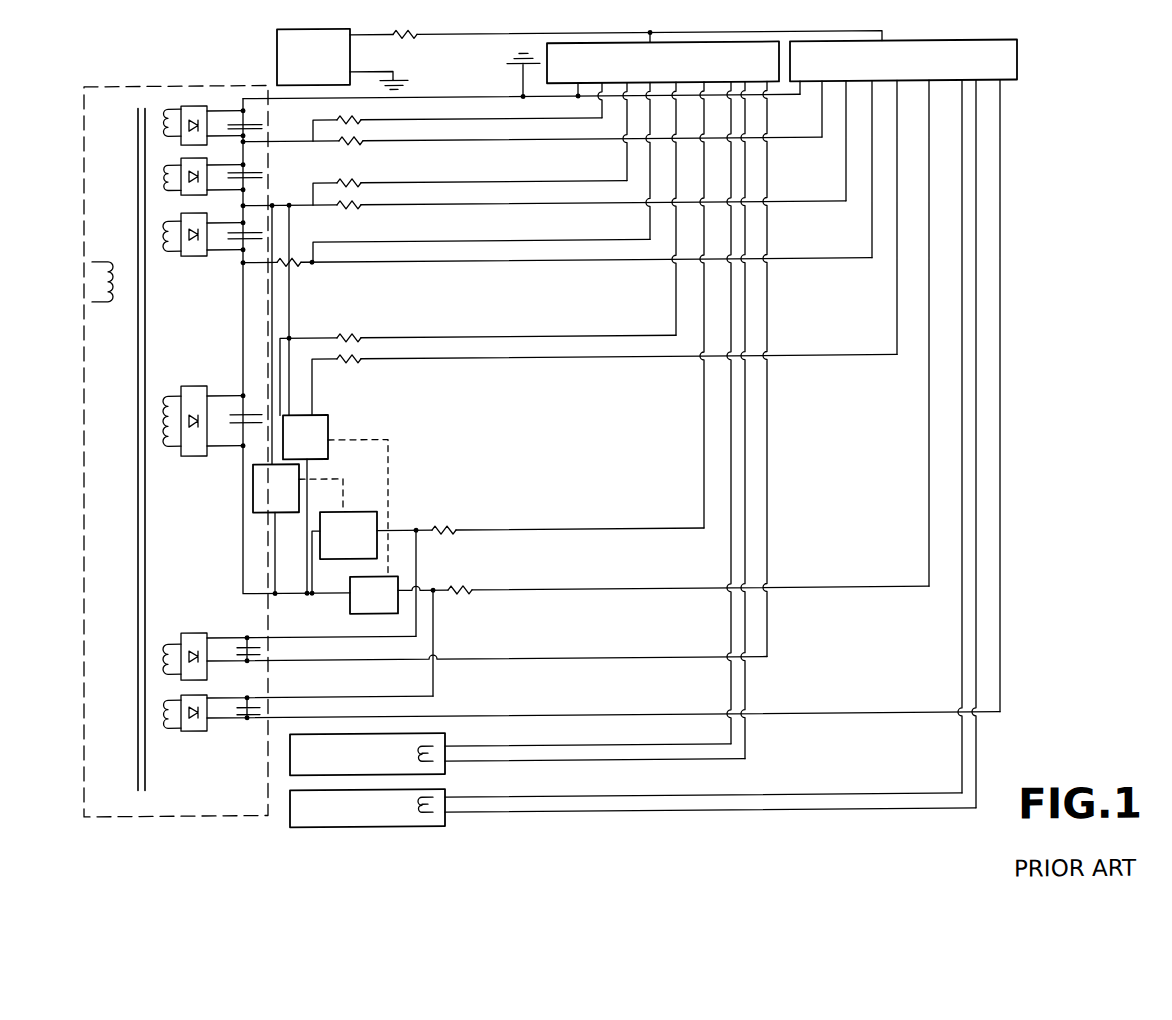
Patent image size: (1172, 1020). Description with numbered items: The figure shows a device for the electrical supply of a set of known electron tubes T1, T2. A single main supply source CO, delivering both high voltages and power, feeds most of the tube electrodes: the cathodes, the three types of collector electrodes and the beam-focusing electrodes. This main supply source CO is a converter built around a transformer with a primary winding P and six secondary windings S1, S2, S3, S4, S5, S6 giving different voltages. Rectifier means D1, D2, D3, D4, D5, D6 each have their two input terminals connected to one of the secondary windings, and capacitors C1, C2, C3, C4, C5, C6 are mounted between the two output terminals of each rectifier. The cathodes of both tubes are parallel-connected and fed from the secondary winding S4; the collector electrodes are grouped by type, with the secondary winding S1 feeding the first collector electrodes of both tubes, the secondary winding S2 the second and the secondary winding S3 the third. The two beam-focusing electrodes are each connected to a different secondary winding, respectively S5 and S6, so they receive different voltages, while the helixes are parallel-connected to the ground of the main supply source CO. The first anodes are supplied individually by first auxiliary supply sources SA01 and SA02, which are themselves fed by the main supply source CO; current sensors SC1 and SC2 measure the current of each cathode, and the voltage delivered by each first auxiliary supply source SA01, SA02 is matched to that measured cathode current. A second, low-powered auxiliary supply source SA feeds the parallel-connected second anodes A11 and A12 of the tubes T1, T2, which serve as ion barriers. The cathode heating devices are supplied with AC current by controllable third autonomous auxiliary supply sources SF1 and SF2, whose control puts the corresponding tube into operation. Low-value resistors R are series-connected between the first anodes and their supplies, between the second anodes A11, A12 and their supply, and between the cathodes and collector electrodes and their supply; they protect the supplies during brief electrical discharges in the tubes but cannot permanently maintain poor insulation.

The main supply source CO is at (149, 83).
The primary winding P is at (93, 257).
The secondary winding S1 is at (166, 107).
The secondary winding S2 is at (167, 158).
The secondary winding S3 is at (168, 213).
The secondary winding S4 is at (172, 384).
The secondary winding S5 is at (172, 628).
The secondary winding S6 is at (171, 728).
The rectifier means D1 is at (194, 103).
The rectifier means D2 is at (194, 155).
The rectifier means D3 is at (195, 210).
The rectifier means D4 is at (195, 383).
The rectifier means D5 is at (194, 630).
The rectifier means D6 is at (202, 728).
The capacitor C1 is at (264, 120).
The capacitor C2 is at (264, 168).
The capacitor C3 is at (233, 242).
The capacitor C4 is at (232, 417).
The capacitor C5 is at (237, 639).
The capacitor C6 is at (238, 719).
The low-value resistor R is at (413, 33).
The second auxiliary supply source SA is at (342, 59).
The first auxiliary supply source SA01 is at (276, 488).
The first auxiliary supply source SA02 is at (305, 437).
The current sensor SC1 is at (348, 535).
The current sensor SC2 is at (374, 594).
The third autonomous auxiliary supply source SF1 is at (517, 753).
The third autonomous auxiliary supply source SF2 is at (633, 806).
The second anode A11 is at (663, 62).
The second anode A12 is at (903, 61).
The electron tube T1 is at (764, 52).
The electron tube T2 is at (1001, 51).